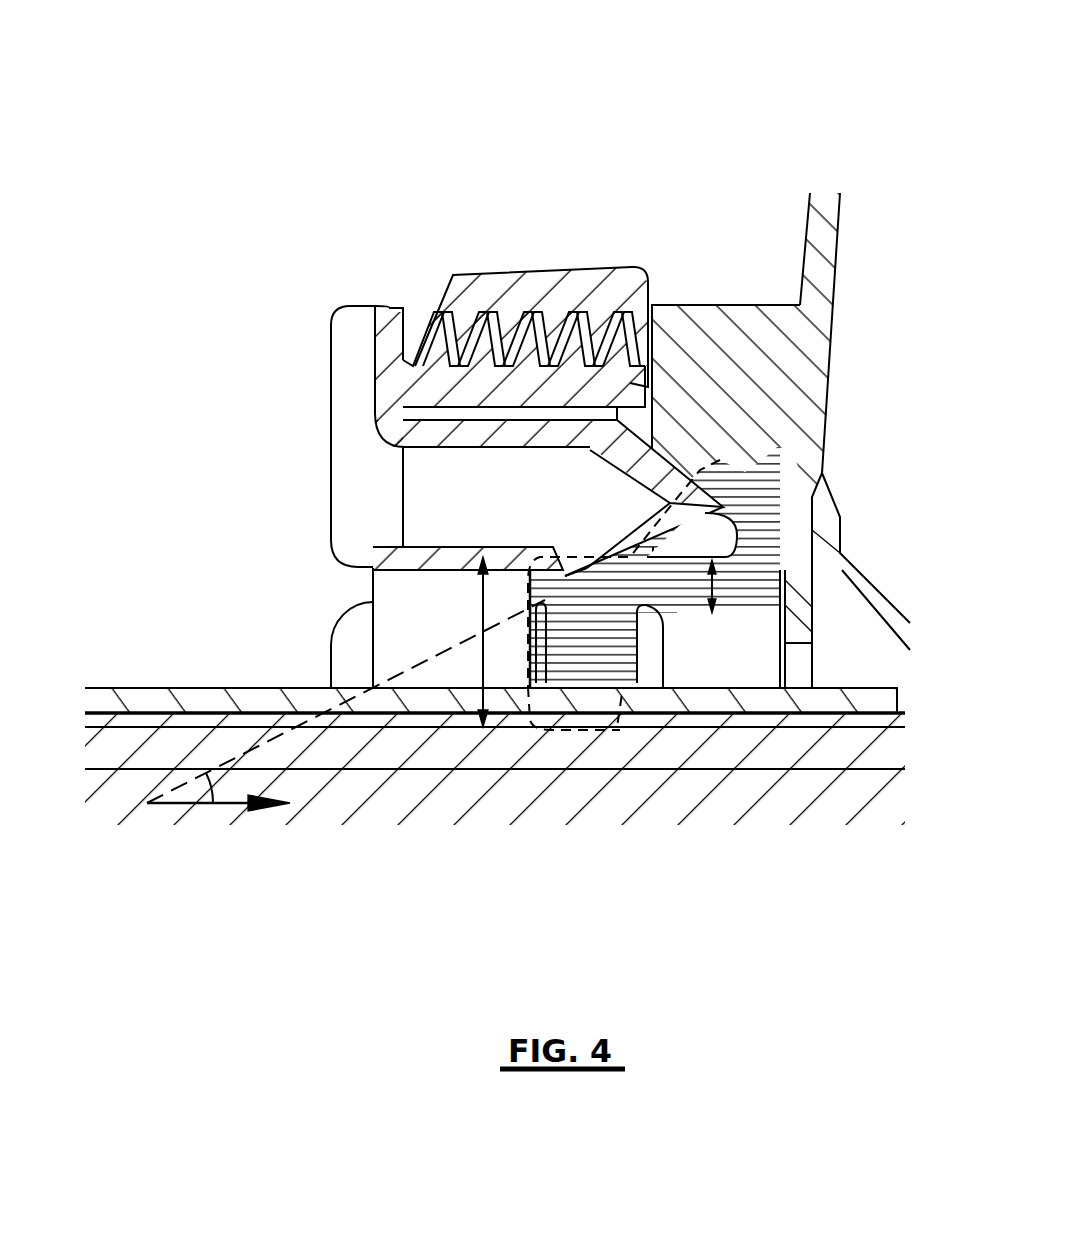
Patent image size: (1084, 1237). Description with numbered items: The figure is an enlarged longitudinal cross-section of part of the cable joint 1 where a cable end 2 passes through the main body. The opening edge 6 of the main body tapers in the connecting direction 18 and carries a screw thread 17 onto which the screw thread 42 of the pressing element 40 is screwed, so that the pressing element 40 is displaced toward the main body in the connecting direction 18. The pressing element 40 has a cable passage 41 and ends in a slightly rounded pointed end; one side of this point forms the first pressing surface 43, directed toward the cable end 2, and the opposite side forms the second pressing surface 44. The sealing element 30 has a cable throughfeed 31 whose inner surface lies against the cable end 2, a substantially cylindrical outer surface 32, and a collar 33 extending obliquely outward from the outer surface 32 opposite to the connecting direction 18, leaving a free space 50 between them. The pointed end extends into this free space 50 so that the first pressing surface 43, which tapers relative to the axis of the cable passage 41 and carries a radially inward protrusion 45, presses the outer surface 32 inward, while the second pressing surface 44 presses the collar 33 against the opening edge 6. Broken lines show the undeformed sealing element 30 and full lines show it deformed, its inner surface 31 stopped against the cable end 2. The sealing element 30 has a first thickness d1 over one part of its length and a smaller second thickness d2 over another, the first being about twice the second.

The cable joint 1 is at (205, 104).
The cable end 2 is at (140, 783).
The opening edge 6 is at (678, 447).
The screw thread 17 is at (400, 392).
The connecting direction 18 is at (203, 803).
The sealing element 30 is at (760, 572).
The cable throughfeed 31 is at (580, 730).
The outer surface 32 is at (578, 553).
The collar 33 is at (720, 460).
The pressing element 40 is at (440, 280).
The cable passage 41 is at (280, 580).
The screw thread 42 is at (445, 300).
The first pressing surface 43 is at (672, 538).
The second pressing surface 44 is at (643, 447).
The protrusion 45 is at (583, 571).
The free space 50 is at (717, 533).
The first thickness d1 is at (472, 600).
The second thickness d2 is at (713, 587).